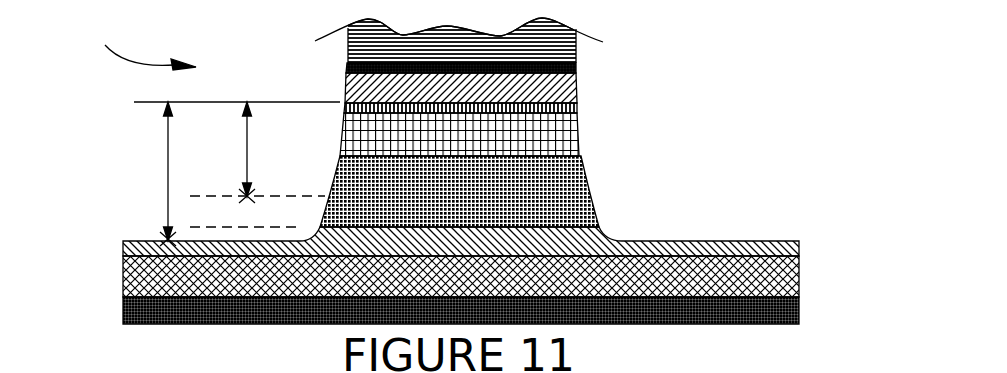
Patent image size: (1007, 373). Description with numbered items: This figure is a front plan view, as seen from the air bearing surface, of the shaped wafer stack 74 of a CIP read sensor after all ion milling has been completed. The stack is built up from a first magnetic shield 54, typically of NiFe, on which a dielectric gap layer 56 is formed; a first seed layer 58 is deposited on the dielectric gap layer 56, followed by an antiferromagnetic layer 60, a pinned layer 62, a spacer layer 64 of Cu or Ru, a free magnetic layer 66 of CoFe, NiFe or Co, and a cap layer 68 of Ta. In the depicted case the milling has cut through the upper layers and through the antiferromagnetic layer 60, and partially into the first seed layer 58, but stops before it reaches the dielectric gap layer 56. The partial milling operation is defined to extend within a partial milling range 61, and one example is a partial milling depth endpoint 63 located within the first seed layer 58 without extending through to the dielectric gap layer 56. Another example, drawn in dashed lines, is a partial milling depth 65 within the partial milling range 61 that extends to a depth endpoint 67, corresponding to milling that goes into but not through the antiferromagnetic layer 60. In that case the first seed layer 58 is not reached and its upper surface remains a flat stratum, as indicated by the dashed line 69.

The first magnetic shield 54 is at (123, 308).
The dielectric gap layer 56 is at (148, 288).
The first seed layer 58 is at (123, 243).
The antiferromagnetic layer 60 is at (588, 188).
The pinned layer 62 is at (581, 133).
The spacer layer 64 is at (577, 99).
The free magnetic layer 66 is at (577, 80).
The cap layer 68 is at (577, 66).
The shaped wafer stack 74 is at (139, 40).
The partial milling range 61 is at (167, 185).
The partial milling depth endpoint 63 is at (163, 241).
The partial milling depth 65 is at (250, 178).
The depth endpoint 67 is at (243, 193).
The dashed line 69 is at (243, 227).